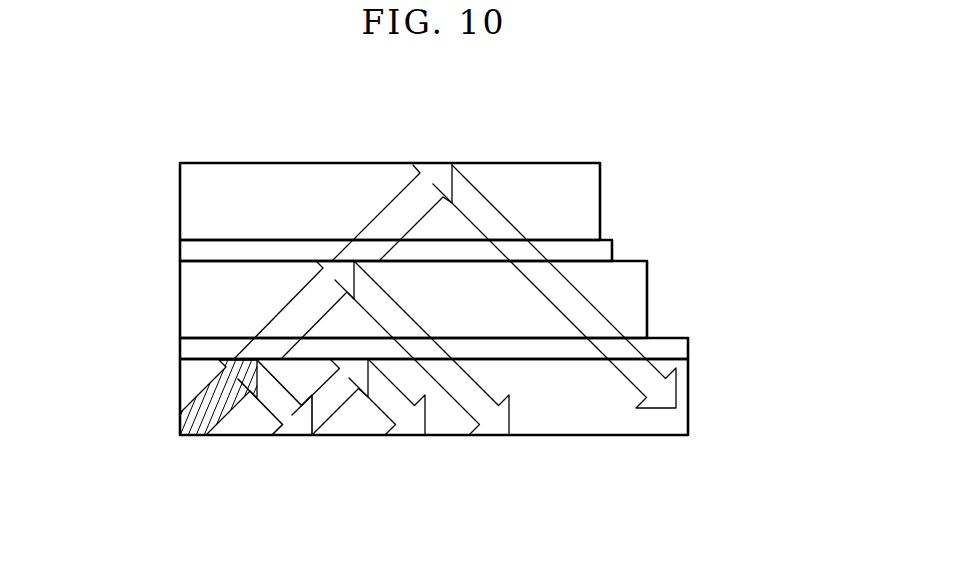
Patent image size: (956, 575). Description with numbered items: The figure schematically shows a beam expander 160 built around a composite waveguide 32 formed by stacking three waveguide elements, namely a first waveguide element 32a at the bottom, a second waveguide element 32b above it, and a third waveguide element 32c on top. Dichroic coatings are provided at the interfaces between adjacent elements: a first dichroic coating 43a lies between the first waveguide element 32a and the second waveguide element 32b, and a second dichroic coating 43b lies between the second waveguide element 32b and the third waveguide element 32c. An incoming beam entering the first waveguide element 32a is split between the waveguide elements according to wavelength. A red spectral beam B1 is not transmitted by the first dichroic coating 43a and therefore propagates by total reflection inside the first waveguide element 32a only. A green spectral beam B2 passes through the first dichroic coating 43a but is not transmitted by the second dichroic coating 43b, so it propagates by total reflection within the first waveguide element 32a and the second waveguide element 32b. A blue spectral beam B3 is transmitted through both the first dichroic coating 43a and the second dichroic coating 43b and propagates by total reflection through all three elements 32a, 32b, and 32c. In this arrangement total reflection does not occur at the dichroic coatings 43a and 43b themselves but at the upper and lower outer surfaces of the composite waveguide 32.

The beam expander 160 is at (729, 142).
The composite waveguide 32 is at (94, 205).
The first waveguide element 32a is at (180, 400).
The second waveguide element 32b is at (180, 300).
The third waveguide element 32c is at (180, 203).
The first dichroic coating 43a is at (688, 350).
The second dichroic coating 43b is at (614, 254).
The red spectral beam B1 is at (305, 418).
The green spectral beam B2 is at (448, 407).
The blue spectral beam B3 is at (601, 325).